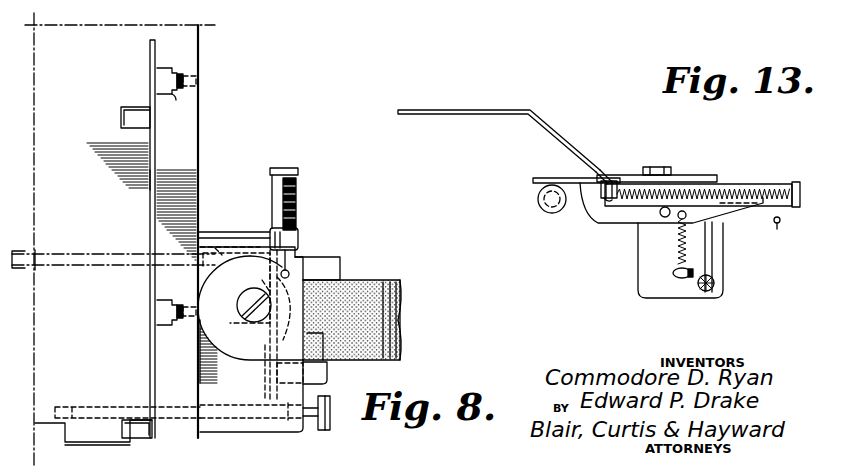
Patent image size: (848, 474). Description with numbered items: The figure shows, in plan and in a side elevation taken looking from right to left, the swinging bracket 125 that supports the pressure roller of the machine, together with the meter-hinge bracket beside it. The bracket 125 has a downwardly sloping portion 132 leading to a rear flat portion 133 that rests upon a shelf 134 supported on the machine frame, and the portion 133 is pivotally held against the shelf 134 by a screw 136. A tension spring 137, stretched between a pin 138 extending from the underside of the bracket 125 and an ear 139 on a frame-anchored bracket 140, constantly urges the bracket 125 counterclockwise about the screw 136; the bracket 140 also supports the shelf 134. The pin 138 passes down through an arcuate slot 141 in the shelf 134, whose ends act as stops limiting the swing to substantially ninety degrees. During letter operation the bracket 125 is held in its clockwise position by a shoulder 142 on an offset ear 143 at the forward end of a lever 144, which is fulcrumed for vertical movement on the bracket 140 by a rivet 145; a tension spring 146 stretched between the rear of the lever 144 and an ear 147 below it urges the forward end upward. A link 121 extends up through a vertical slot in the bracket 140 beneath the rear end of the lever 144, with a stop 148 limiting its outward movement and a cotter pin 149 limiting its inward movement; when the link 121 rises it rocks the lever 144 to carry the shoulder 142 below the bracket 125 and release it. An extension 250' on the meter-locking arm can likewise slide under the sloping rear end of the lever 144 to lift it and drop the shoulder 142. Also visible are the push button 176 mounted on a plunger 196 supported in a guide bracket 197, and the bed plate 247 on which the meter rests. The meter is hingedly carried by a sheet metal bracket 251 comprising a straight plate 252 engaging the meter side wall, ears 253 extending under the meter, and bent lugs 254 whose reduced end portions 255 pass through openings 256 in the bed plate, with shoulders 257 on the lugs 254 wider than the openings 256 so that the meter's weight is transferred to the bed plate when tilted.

In FIG. 8, the link 121 is at (28, 265).
In FIG. 13, the link 121 is at (708, 294).
In FIG. 8, the swinging bracket 125 is at (401, 283).
In FIG. 13, the swinging bracket 125 is at (488, 94).
In FIG. 8, the downwardly sloping portion 132 is at (358, 284).
In FIG. 13, the downwardly sloping portion 132 is at (553, 133).
In FIG. 8, the rear flat portion 133 is at (256, 360).
In FIG. 13, the rear flat portion 133 is at (696, 175).
In FIG. 8, the shelf 134 is at (210, 398).
In FIG. 13, the shelf 134 is at (546, 179).
In FIG. 8, the screw 136 is at (243, 298).
In FIG. 13, the screw 136 is at (661, 167).
In FIG. 8, the tension spring 137 is at (297, 194).
In FIG. 13, the tension spring 137 is at (741, 190).
In FIG. 8, the pin 138 is at (290, 272).
In FIG. 13, the pin 138 is at (607, 200).
In FIG. 8, the ear 139 is at (286, 168).
In FIG. 13, the ear 139 is at (796, 182).
In FIG. 8, the bracket 140 is at (232, 325).
In FIG. 13, the bracket 140 is at (640, 284).
In FIG. 8, the arcuate slot 141 is at (276, 337).
In FIG. 8, the shoulder 142 is at (308, 374).
In FIG. 13, the shoulder 142 is at (587, 187).
In FIG. 8, the offset ear 143 is at (328, 368).
In FIG. 13, the offset ear 143 is at (622, 181).
In FIG. 8, the lever 144 is at (269, 374).
In FIG. 13, the lever 144 is at (724, 210).
In FIG. 8, the rivet 145 is at (262, 285).
In FIG. 13, the rivet 145 is at (663, 218).
In FIG. 13, the tension spring 146 is at (679, 252).
In FIG. 13, the ear 147 is at (680, 281).
In FIG. 8, the stop 148 is at (260, 242).
In FIG. 13, the stop 148 is at (714, 269).
In FIG. 13, the cotter pin 149 is at (716, 288).
In FIG. 8, the push button 176 is at (323, 420).
In FIG. 8, the plunger 196 is at (250, 424).
In FIG. 8, the guide bracket 197 is at (100, 410).
In FIG. 8, the bed plate 247 is at (196, 186).
In FIG. 8, the extension 250' is at (234, 215).
In FIG. 13, the extension 250' is at (783, 233).
In FIG. 8, the sheet metal bracket 251 is at (157, 176).
In FIG. 8, the straight plate 252 is at (150, 284).
In FIG. 8, the ears 253 is at (121, 119).
In FIG. 8, the bent lugs 254 is at (160, 68).
In FIG. 8, the reduced end portions 255 is at (196, 80).
In FIG. 8, the openings 256 is at (183, 76).
In FIG. 8, the shoulders 257 is at (175, 94).